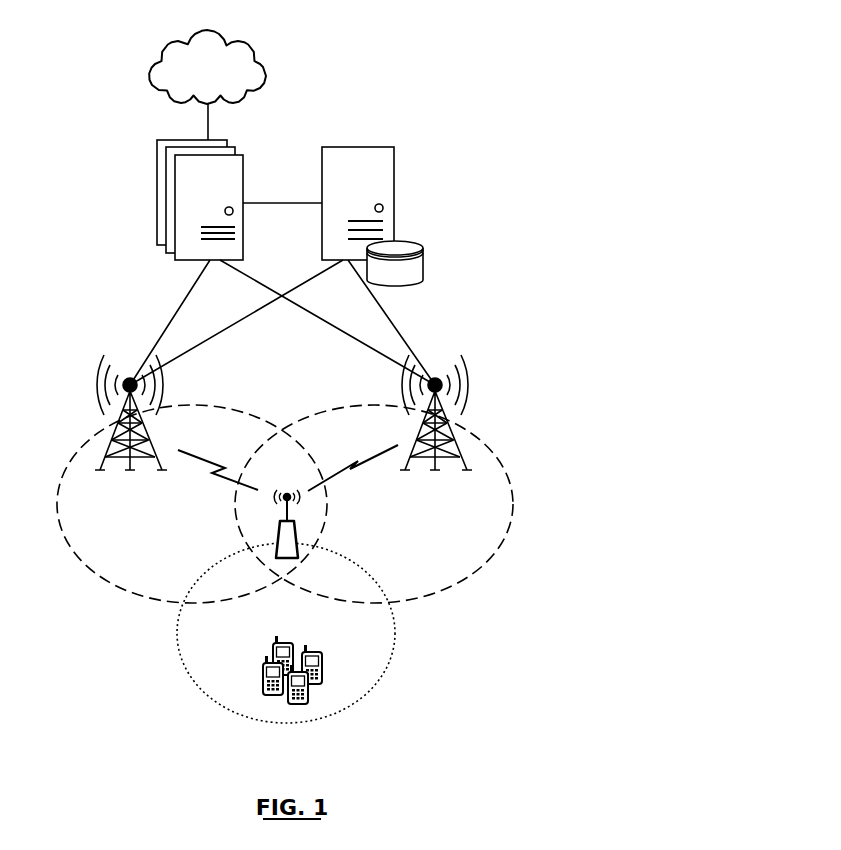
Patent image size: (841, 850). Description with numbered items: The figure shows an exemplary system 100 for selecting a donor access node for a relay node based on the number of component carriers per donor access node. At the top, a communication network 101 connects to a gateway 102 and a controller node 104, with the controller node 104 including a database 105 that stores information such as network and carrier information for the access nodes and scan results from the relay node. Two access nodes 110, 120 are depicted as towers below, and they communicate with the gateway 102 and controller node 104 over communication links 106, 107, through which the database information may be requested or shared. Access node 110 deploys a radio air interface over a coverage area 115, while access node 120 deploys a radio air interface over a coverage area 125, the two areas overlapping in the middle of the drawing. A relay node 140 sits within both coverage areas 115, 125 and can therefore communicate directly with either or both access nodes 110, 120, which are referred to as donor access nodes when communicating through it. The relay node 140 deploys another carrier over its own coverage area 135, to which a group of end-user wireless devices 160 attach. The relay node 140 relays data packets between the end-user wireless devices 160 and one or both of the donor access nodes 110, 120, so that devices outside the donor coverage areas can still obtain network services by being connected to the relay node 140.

The system 100 is at (341, 40).
The communication network 101 is at (194, 78).
The gateway 102 is at (159, 176).
The controller node 104 is at (394, 190).
The database 105 is at (423, 262).
The communication link 106 is at (263, 287).
The communication link 107 is at (232, 326).
The access node 110 is at (117, 448).
The coverage area 115 is at (122, 590).
The access node 120 is at (453, 450).
The coverage area 125 is at (450, 590).
The coverage area 135 is at (347, 704).
The relay node 140 is at (295, 527).
The end-user wireless devices 160 is at (246, 665).